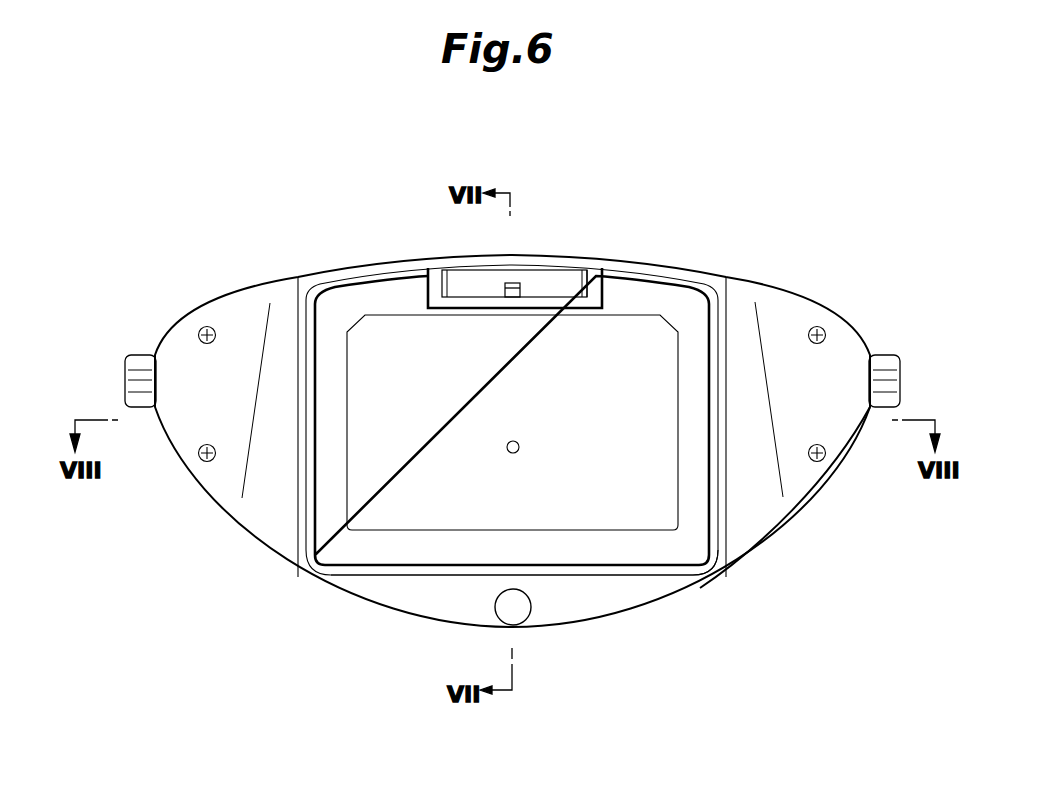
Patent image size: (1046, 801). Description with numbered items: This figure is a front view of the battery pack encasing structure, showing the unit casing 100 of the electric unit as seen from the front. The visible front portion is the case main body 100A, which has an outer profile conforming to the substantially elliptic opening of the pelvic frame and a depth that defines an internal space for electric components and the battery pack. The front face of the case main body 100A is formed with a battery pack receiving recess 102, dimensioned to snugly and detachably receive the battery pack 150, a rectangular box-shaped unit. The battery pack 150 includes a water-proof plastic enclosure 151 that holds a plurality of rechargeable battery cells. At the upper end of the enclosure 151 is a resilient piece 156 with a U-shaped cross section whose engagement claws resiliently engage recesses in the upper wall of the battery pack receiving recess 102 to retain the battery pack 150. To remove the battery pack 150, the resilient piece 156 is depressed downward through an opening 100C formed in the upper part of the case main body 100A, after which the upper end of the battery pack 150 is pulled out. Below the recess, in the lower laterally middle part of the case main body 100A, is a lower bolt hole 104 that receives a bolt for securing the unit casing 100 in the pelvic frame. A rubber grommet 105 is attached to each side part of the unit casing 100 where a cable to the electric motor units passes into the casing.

The unit casing 100 is at (743, 259).
The case main body 100A is at (767, 528).
The opening 100C is at (577, 292).
The battery pack receiving recess 102 is at (310, 487).
The lower bolt hole 104 is at (523, 611).
The rubber grommet 105 is at (138, 360).
The battery pack 150 is at (606, 506).
The enclosure 151 is at (675, 557).
The resilient piece 156 is at (537, 280).